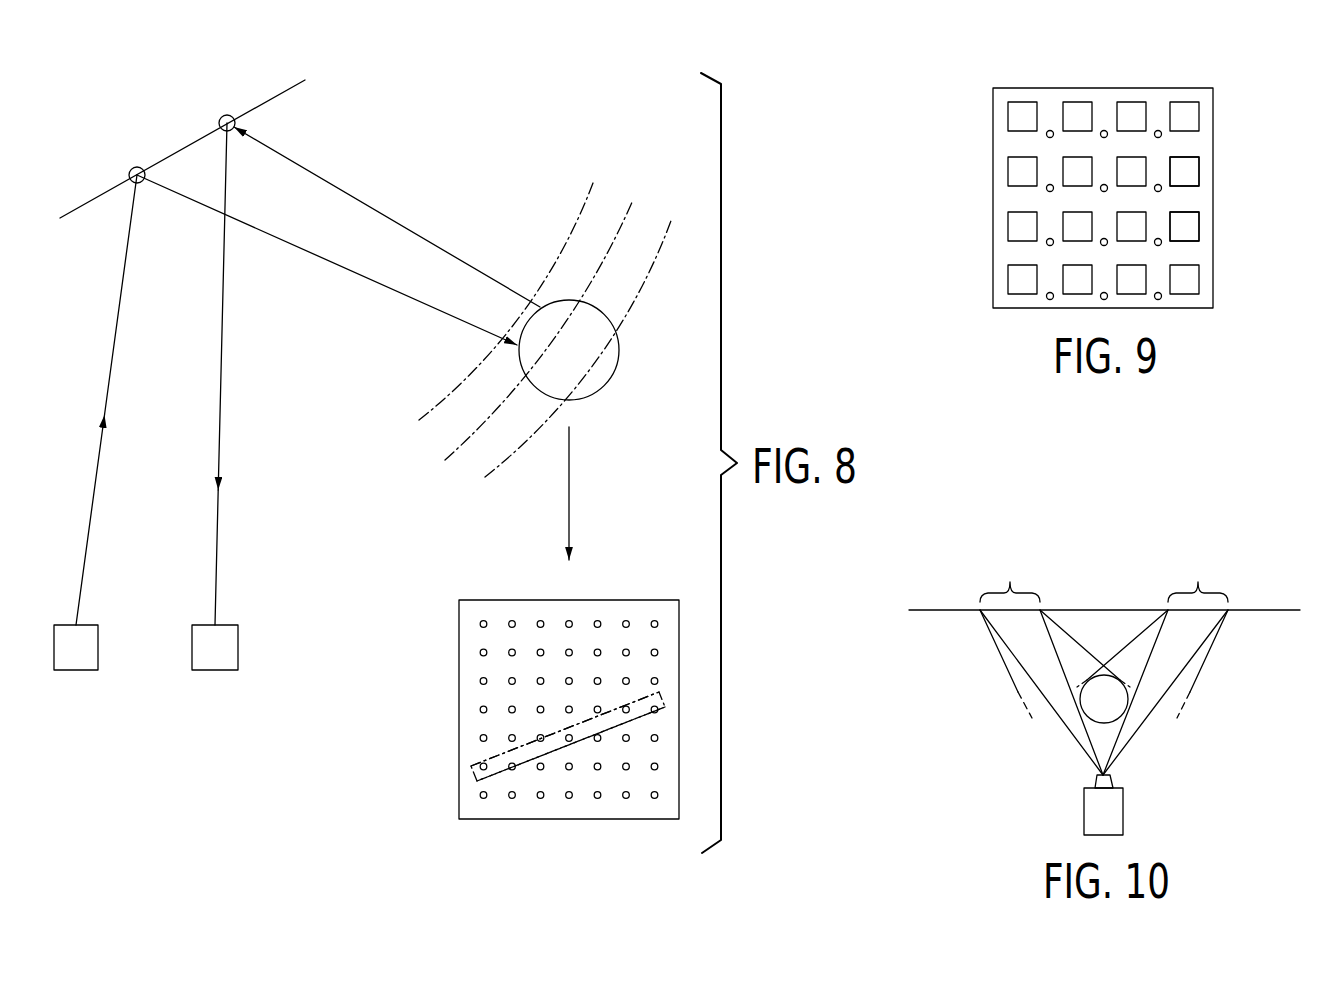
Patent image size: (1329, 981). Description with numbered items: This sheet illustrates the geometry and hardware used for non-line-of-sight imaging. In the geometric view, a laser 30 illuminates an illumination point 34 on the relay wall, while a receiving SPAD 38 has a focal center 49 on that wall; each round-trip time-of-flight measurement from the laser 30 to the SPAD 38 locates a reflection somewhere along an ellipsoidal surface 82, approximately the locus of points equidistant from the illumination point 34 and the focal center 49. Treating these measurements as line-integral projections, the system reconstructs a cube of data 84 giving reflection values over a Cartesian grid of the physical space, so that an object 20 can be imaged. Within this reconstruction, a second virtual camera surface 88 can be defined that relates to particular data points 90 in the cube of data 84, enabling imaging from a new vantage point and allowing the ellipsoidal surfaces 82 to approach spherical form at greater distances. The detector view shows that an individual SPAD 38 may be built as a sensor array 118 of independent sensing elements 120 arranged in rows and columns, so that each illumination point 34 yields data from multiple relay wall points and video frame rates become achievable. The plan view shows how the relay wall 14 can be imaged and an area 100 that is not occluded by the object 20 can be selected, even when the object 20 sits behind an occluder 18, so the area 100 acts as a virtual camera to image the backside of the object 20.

In FIG. 8, the relay wall 14 is at (270, 103).
In FIG. 10, the relay wall 14 is at (1263, 610).
In FIG. 8, the illumination point 34 is at (130, 168).
In FIG. 9, the illumination point 34 is at (1048, 128).
In FIG. 8, the focal center 49 is at (220, 117).
In FIG. 8, the laser 30 is at (98, 648).
In FIG. 8, the SPAD 38 is at (238, 648).
In FIG. 9, the SPAD 38 is at (1218, 82).
In FIG. 8, the object 20 is at (605, 387).
In FIG. 10, the object 20 is at (1097, 707).
In FIG. 8, the ellipsoidal surface 82 is at (480, 480).
In FIG. 8, the cube of data 84 is at (681, 598).
In FIG. 8, the second virtual camera surface 88 is at (466, 782).
In FIG. 8, the data points 90 is at (628, 737).
In FIG. 9, the sensor array 118 is at (1003, 142).
In FIG. 9, the sensing element 120 is at (1185, 171).
In FIG. 10, the area 100 is at (1104, 576).
In FIG. 10, the occluder 18 is at (1110, 812).